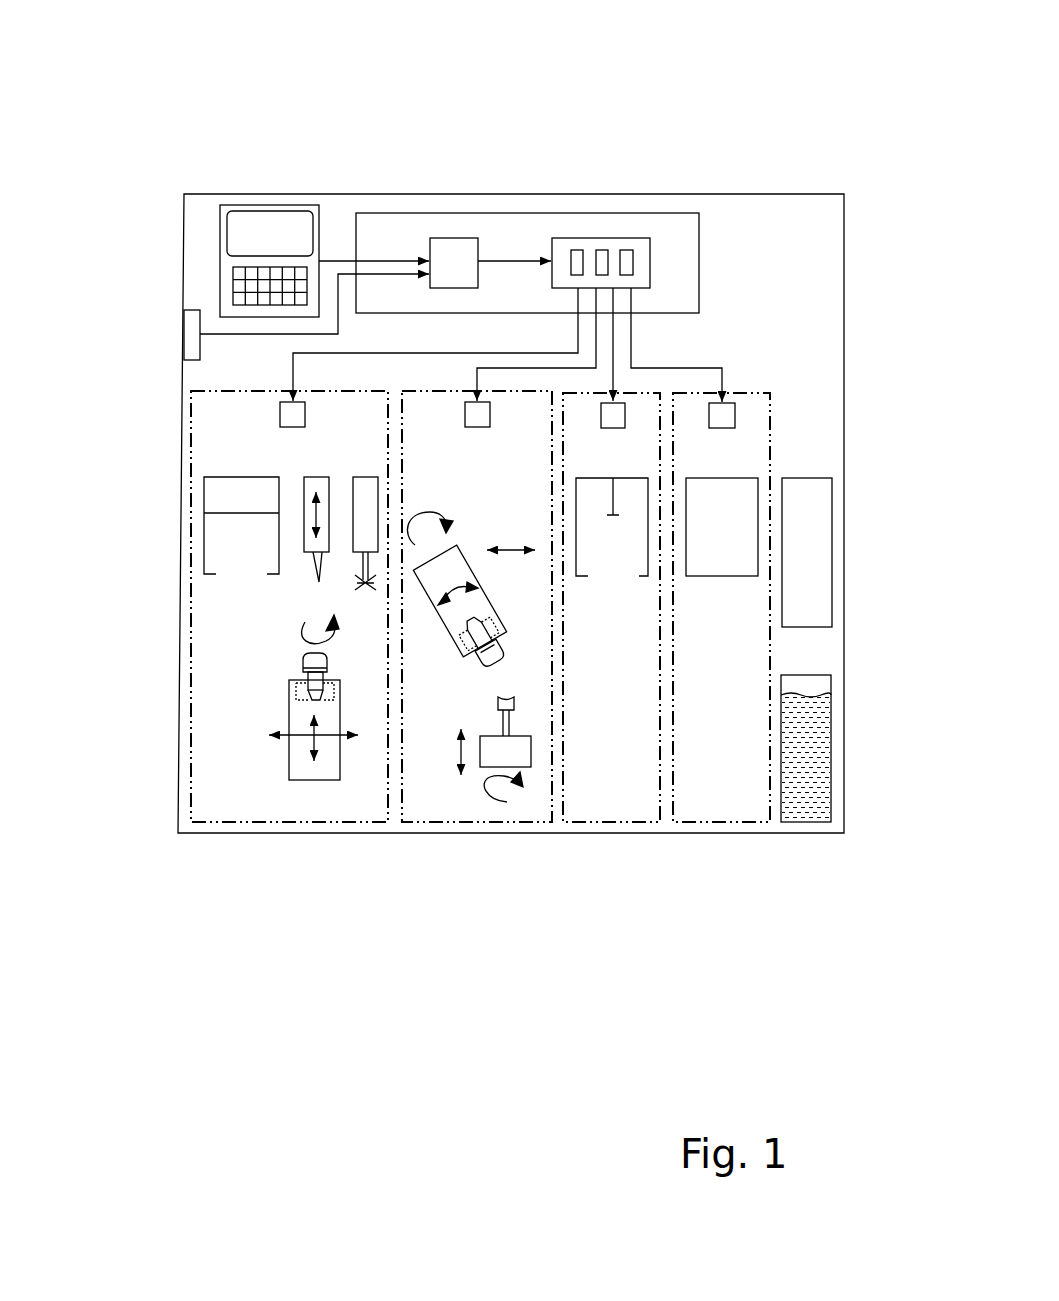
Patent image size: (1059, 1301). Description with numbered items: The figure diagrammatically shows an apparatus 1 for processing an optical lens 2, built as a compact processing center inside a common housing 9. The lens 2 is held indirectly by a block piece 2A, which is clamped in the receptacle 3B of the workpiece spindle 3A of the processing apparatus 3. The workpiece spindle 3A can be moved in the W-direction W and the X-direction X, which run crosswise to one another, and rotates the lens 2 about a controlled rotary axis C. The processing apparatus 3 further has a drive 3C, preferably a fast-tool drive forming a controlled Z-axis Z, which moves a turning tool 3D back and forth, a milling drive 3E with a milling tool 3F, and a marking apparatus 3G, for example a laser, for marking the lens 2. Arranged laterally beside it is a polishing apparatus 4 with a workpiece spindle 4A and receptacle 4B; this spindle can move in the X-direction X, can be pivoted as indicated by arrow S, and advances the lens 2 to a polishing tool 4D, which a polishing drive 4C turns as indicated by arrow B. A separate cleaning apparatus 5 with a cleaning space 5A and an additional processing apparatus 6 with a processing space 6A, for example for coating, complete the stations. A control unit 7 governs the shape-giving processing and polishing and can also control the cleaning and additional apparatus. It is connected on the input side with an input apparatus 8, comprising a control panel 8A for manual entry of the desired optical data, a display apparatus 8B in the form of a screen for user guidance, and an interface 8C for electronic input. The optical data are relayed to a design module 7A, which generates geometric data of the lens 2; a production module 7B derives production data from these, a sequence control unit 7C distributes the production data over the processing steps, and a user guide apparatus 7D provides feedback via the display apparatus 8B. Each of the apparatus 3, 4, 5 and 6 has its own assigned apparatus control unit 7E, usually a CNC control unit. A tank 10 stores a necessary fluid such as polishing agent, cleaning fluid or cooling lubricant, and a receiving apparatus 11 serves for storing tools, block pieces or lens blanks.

The apparatus 1 is at (160, 141).
The optical lens 2 is at (303, 663).
The block piece 2A is at (305, 672).
The processing apparatus 3 is at (228, 827).
The workpiece spindle 3A is at (289, 708).
The receptacle 3B is at (296, 686).
The drive 3C is at (312, 480).
The turning tool 3D is at (318, 578).
The milling drive 3E is at (357, 480).
The milling tool 3F is at (365, 588).
The marking apparatus 3G is at (207, 494).
The polishing apparatus 4 is at (537, 822).
The workpiece spindle 4A is at (430, 608).
The receptacle 4B is at (445, 650).
The polishing drive 4C is at (487, 767).
The polishing tool 4D is at (497, 700).
The cleaning apparatus 5 is at (647, 830).
The cleaning space 5A is at (647, 547).
The additional processing apparatus 6 is at (759, 830).
The processing space 6A is at (716, 562).
The control unit 7 is at (362, 212).
The design module 7A is at (449, 238).
The production module 7B is at (571, 250).
The sequence control unit 7C is at (600, 250).
The user guide apparatus 7D is at (626, 250).
The apparatus control unit 7E is at (622, 405).
The input apparatus 8 is at (220, 240).
The control panel 8A is at (233, 287).
The display apparatus 8B is at (287, 222).
The interface 8C is at (185, 347).
The housing 9 is at (180, 805).
The tank 10 is at (806, 812).
The receiving apparatus 11 is at (815, 487).
The W-direction W is at (312, 752).
The X-direction X is at (343, 740).
The Z-axis Z is at (313, 522).
The arrow B is at (507, 802).
The rotary axis C is at (300, 633).
The arrow S is at (478, 585).